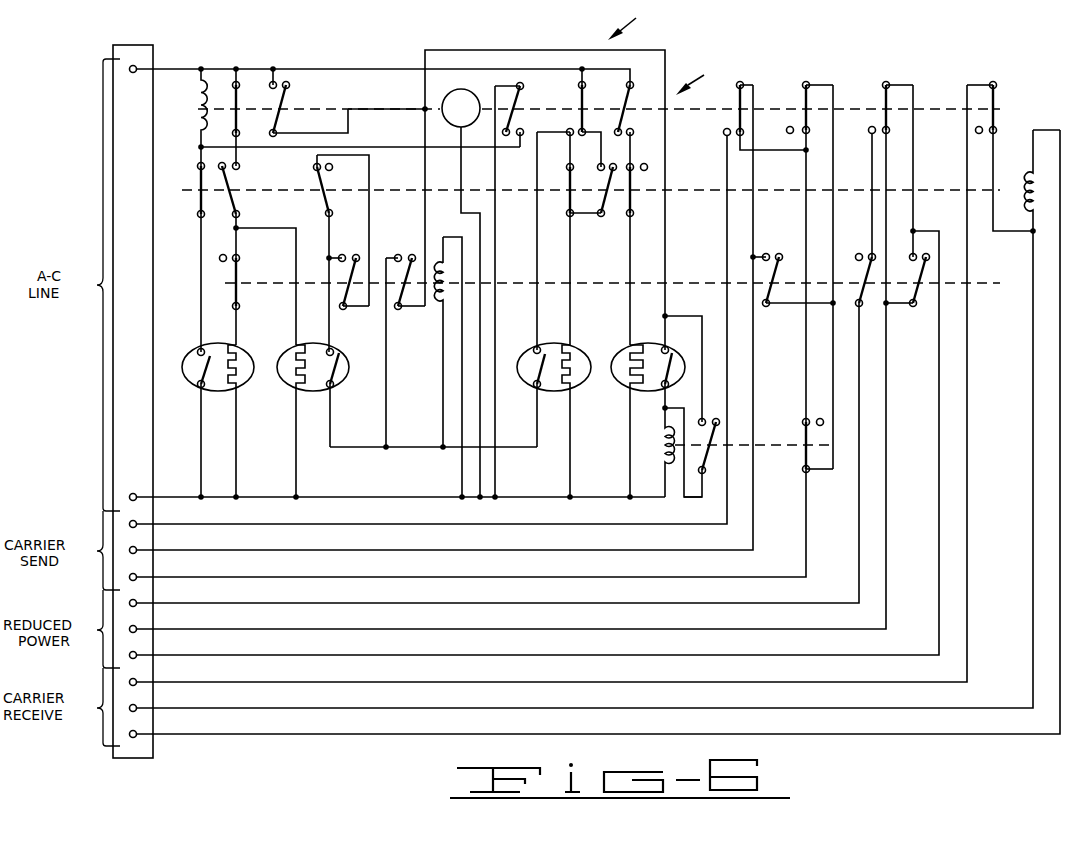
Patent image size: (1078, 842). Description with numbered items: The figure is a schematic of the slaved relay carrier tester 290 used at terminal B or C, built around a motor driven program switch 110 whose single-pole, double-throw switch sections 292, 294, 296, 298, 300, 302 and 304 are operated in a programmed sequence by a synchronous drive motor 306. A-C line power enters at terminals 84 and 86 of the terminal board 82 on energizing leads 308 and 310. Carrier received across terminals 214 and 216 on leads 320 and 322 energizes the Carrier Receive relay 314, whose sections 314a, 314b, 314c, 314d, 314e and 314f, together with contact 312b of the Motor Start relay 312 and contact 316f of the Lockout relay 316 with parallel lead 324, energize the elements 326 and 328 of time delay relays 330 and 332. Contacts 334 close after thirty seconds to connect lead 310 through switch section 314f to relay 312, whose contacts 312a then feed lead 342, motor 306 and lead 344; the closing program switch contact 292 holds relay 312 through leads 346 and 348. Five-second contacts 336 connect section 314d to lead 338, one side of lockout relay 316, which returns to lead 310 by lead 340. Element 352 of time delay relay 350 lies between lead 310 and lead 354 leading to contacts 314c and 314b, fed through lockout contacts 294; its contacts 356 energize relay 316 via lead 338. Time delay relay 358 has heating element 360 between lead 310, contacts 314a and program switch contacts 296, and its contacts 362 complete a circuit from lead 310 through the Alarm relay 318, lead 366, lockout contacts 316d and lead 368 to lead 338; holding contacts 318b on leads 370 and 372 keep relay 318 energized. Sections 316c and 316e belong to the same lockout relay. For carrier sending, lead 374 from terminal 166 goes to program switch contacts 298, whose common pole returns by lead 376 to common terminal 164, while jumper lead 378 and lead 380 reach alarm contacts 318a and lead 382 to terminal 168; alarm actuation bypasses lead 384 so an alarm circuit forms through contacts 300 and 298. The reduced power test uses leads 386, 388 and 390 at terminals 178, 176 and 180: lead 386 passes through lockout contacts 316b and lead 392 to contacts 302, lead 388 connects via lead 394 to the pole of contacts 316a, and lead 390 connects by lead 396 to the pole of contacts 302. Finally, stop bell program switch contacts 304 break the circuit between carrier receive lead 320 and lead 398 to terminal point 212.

The terminal board 82 is at (113, 347).
The terminal 84 is at (138, 66).
The terminal 86 is at (136, 496).
The motor driven program switch 110 is at (701, 75).
The common terminal connection 164 is at (136, 549).
The terminal 166 is at (136, 523).
The terminal 168 is at (136, 576).
The reduced power terminal 176 is at (136, 628).
The reduced power terminal 178 is at (136, 602).
The reduced power terminal 180 is at (136, 654).
The terminal point 212 is at (136, 681).
The terminal 214 is at (136, 707).
The terminal 216 is at (136, 733).
The relay carrier tester 290 is at (642, 22).
The program switch contact 292 is at (522, 92).
The lockout contacts 294 is at (580, 128).
The program switch contacts 296 is at (618, 103).
The program switch contacts 298 is at (742, 100).
The program switch contacts 300 is at (812, 98).
The program switch contacts 302 is at (890, 100).
The program switch contacts 304 is at (995, 98).
The synchronous drive motor 306 is at (474, 97).
The energizing lead 308 is at (183, 68).
The energizing lead 310 is at (224, 503).
The Motor Start relay 312 is at (198, 109).
The switch section 312a is at (286, 97).
The switch section 312b is at (237, 98).
The Carrier Receive relay 314 is at (1028, 177).
The relay contacts 314a is at (633, 204).
The relay contacts 314b is at (607, 200).
The relay contacts 314c is at (569, 193).
The relay section 314d is at (318, 182).
The relay contact 314e is at (240, 203).
The switch section 314f is at (197, 195).
The Lockout relay 316 is at (440, 262).
The relay contacts 316a is at (887, 310).
The relay contacts 316b is at (866, 268).
The switch section 316c is at (766, 306).
The relay contacts 316d is at (398, 298).
The switch section 316e is at (342, 298).
The relay contact 316f is at (237, 297).
The Alarm relay 318 is at (665, 450).
The relay contacts 318a is at (806, 428).
The relay contacts 318b is at (708, 457).
The lead 320 is at (1033, 298).
The lead 322 is at (1058, 358).
The parallel lead 324 is at (295, 242).
The element 326 is at (240, 355).
The element 328 is at (290, 388).
The time delay relay 330 is at (200, 388).
The time delay relay 332 is at (333, 389).
The relay contacts 334 is at (198, 347).
The relay contacts 336 is at (338, 358).
The lead 338 is at (425, 450).
The lead 340 is at (462, 373).
The lead 342 is at (368, 109).
The lead 344 is at (479, 394).
The lead 346 is at (495, 254).
The lead 348 is at (365, 147).
The time delay relay 350 is at (576, 344).
The element 352 is at (573, 385).
The lead 354 is at (571, 258).
The relay contacts 356 is at (534, 350).
The time delay relay 358 is at (632, 345).
The heating element 360 is at (671, 356).
The contacts 362 is at (640, 420).
The lead 366 is at (446, 36).
The lead 368 is at (387, 366).
The lead 370 is at (695, 500).
The lead 372 is at (676, 312).
The lead 374 is at (727, 253).
The lead 376 is at (754, 205).
The jumper lead 378 is at (798, 152).
The lead 380 is at (806, 232).
The lead 382 is at (808, 490).
The lead 384 is at (834, 400).
The lead 386 is at (860, 515).
The lead 388 is at (889, 522).
The output lead 390 is at (943, 552).
The lead 392 is at (872, 177).
The lead 394 is at (887, 323).
The lead 396 is at (914, 152).
The lead 398 is at (440, 682).